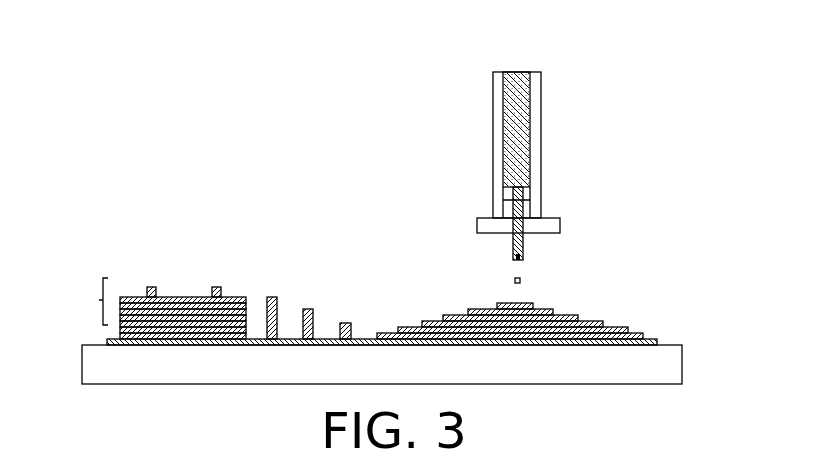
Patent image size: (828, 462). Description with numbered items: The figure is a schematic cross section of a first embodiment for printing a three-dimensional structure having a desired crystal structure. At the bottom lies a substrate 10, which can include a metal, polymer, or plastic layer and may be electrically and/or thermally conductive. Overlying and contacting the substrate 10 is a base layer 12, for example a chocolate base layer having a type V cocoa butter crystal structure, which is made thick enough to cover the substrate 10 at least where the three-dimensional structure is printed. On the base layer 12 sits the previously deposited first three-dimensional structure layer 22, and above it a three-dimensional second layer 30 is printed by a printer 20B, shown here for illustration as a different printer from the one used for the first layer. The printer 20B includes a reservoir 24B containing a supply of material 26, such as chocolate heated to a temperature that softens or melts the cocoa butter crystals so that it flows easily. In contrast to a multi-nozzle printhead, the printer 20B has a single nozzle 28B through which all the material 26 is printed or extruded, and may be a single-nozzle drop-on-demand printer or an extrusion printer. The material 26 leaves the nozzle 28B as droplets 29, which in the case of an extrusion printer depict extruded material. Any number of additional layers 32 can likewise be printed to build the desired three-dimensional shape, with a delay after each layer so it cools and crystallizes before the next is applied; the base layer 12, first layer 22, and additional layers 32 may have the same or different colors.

The substrate 10 is at (82, 358).
The base layer 12 is at (107, 341).
The printer 20B is at (531, 181).
The first 3D structure layer 22 is at (637, 338).
The reservoir 24B is at (531, 129).
The material 26 is at (503, 117).
The single nozzle 28B is at (523, 257).
The droplets 29 is at (515, 280).
The 3D second layer 30 is at (538, 304).
The additional layers 32 is at (99, 300).